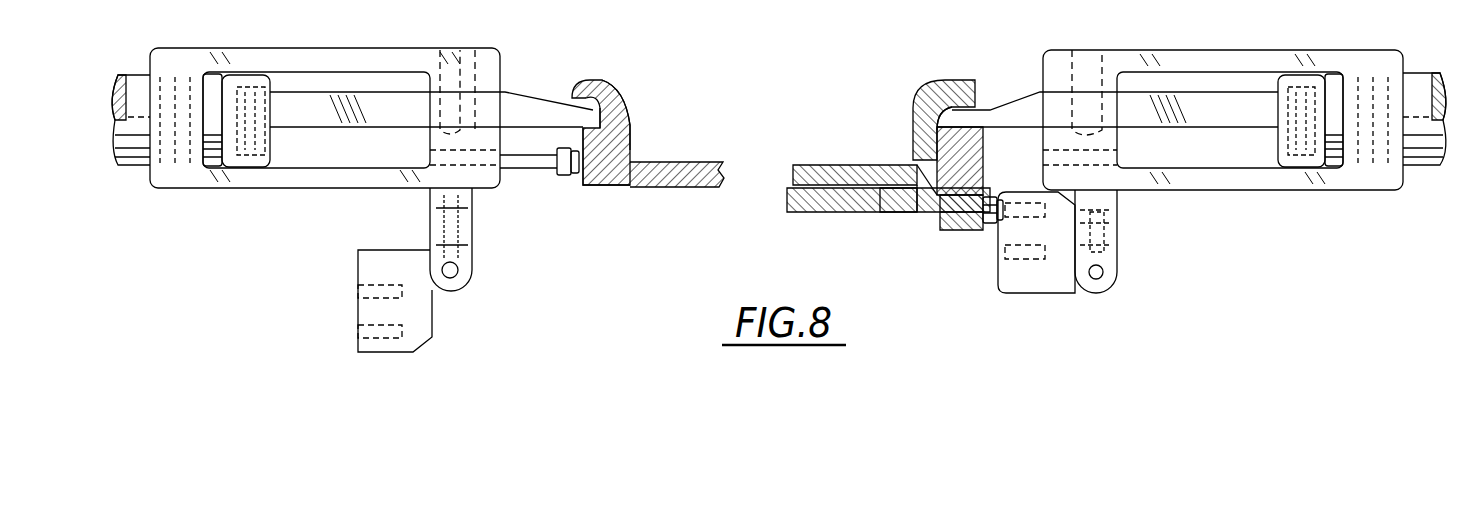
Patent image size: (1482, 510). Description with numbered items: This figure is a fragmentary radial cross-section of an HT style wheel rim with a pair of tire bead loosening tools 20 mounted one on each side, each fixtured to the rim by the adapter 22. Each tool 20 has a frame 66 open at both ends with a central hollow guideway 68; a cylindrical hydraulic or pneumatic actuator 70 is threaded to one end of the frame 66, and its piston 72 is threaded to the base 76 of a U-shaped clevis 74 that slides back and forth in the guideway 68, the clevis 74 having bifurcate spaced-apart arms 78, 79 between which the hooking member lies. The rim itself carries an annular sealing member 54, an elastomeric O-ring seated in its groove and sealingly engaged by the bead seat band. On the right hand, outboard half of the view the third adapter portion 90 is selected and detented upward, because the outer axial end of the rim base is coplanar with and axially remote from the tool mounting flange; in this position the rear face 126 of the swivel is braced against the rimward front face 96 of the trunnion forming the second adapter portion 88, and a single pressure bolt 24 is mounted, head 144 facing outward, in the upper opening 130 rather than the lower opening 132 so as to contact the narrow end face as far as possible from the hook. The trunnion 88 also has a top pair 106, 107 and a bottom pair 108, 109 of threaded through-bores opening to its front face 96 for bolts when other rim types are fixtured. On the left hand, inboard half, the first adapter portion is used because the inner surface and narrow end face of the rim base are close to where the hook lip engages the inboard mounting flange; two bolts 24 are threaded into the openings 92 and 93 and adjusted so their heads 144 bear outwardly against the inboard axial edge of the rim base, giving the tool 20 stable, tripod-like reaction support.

The tire bead loosening tool 20 is at (216, 207).
The adapter 22 is at (468, 292).
The pressure bolt 24 is at (538, 170).
The annular sealing member 54 is at (925, 200).
The frame 66 is at (178, 60).
The guideway 68 is at (320, 72).
The actuator 70 is at (138, 80).
The piston 72 is at (212, 82).
The clevis 74 is at (366, 100).
The base 76 is at (258, 72).
The arm 78 is at (1012, 106).
The arm 79 is at (515, 100).
The second adapter portion 88 is at (474, 268).
The third adapter portion 90 is at (420, 350).
The threaded opening 92 is at (1120, 150).
The threaded opening 93 is at (420, 155).
The front face 96 is at (472, 211).
The threaded through-bore 106 is at (1117, 212).
The threaded through-bore 107 is at (430, 209).
The threaded through-bore 108 is at (1117, 248).
The threaded through-bore 109 is at (430, 245).
The rear face 126 is at (450, 318).
The upper threaded opening 130 is at (358, 330).
The lower threaded opening 132 is at (358, 288).
The head 144 is at (570, 177).